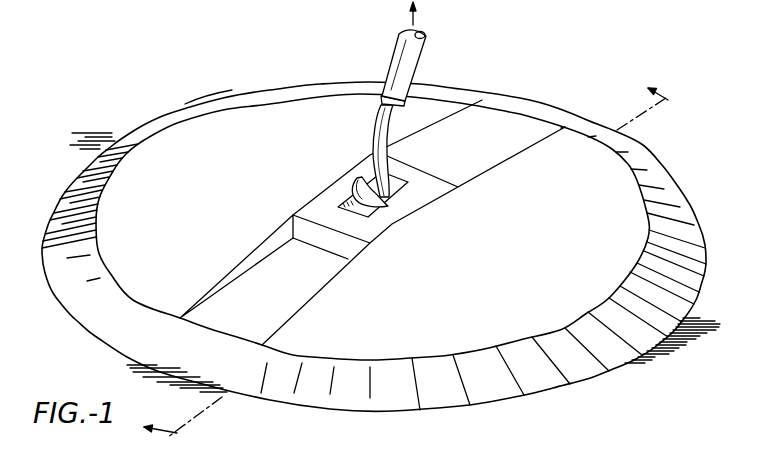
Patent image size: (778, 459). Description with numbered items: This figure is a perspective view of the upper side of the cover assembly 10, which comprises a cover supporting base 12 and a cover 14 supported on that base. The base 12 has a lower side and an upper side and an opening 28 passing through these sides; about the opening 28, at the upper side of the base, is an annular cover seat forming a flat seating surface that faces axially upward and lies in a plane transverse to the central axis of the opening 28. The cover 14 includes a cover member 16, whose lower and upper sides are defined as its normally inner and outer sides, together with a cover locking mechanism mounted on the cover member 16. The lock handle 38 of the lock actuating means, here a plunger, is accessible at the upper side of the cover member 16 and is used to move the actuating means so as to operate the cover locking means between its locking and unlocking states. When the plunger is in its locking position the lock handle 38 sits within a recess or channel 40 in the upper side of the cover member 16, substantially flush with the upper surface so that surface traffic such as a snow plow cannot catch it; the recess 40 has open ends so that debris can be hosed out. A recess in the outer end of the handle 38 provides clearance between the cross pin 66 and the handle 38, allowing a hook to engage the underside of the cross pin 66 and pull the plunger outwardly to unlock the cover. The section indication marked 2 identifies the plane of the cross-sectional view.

The cover assembly 10 is at (487, 71).
The cover supporting base 12 is at (77, 321).
The cover 14 is at (356, 119).
The cover member 16 is at (130, 194).
The opening 28 is at (207, 80).
The lock handle 38 is at (403, 208).
The recess or channel 40 is at (218, 290).
The cross pin 66 is at (385, 199).
The section line 2- 2 is at (415, 272).